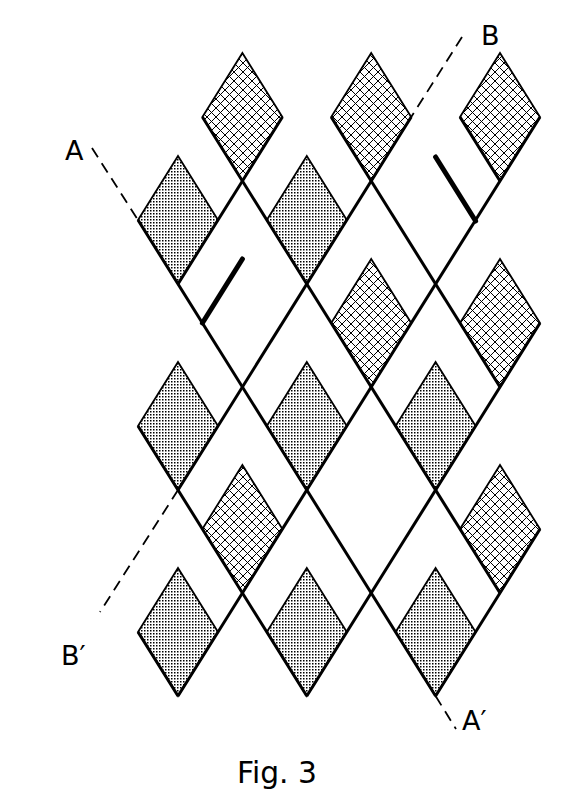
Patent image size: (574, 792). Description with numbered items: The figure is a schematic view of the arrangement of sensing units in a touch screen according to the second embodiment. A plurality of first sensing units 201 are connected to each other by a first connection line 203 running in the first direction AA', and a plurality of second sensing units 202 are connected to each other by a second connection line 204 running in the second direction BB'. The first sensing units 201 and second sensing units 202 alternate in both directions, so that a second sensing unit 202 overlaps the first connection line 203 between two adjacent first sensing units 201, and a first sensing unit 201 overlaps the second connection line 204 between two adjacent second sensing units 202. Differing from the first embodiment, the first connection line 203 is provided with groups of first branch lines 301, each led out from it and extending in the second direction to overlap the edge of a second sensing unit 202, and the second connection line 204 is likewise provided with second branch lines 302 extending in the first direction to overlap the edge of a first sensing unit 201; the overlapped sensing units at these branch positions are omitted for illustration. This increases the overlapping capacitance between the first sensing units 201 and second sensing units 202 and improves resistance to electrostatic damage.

The first sensing unit 201 is at (183, 198).
The second sensing unit 202 is at (233, 110).
The first connection line 203 is at (186, 301).
The second connection line 204 is at (357, 205).
The first branch line 301 is at (214, 306).
The second branch line 302 is at (449, 178).